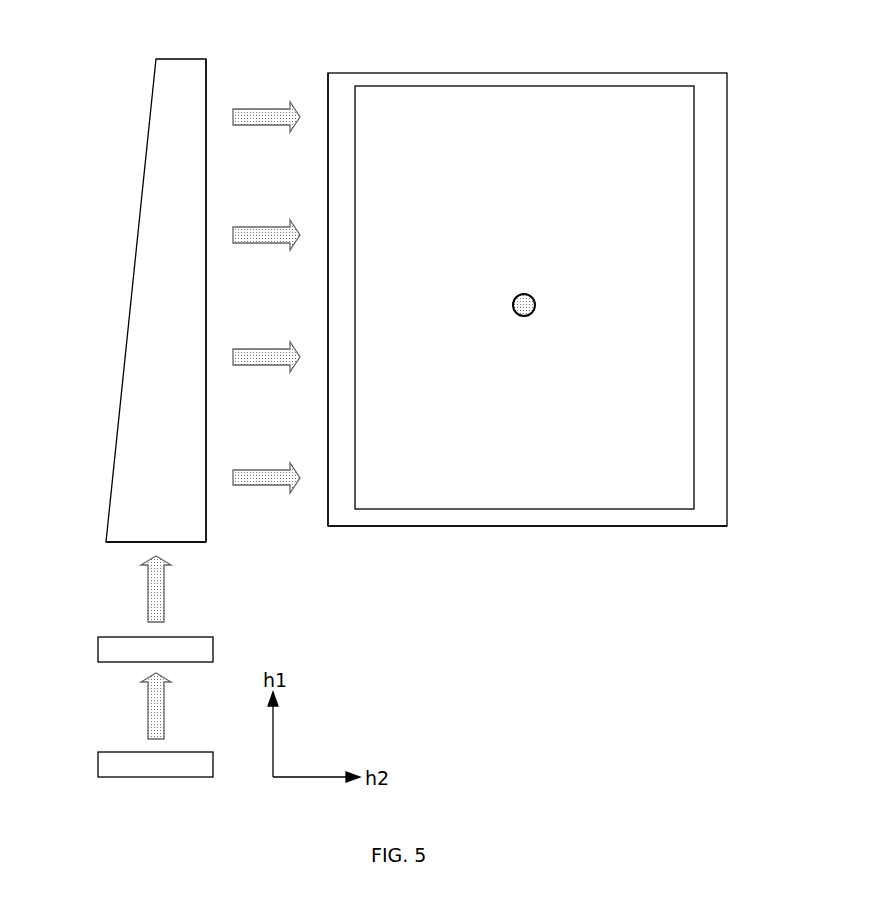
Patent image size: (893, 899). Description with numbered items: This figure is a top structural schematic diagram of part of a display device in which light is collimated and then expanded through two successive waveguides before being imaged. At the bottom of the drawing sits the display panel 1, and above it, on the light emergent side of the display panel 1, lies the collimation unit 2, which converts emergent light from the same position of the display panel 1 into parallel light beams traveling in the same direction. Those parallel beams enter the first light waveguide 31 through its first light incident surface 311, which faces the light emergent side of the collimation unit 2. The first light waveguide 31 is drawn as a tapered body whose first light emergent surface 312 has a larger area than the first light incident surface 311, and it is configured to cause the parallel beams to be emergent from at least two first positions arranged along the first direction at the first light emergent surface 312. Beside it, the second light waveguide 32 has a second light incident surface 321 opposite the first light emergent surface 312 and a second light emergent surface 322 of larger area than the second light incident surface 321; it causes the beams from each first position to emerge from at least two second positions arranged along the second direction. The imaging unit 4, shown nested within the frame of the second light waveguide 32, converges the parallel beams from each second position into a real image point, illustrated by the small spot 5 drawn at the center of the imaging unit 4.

The display panel 1 is at (104, 760).
The collimation unit 2 is at (104, 643).
The first light waveguide 31 is at (137, 392).
The first light incident surface 311 is at (110, 544).
The first light emergent surface 312 is at (206, 518).
The second light waveguide 32 is at (703, 268).
The second light incident surface 321 is at (328, 516).
The second light emergent surface 322 is at (484, 518).
The imaging unit 4 is at (696, 330).
The light spot 5 is at (536, 303).